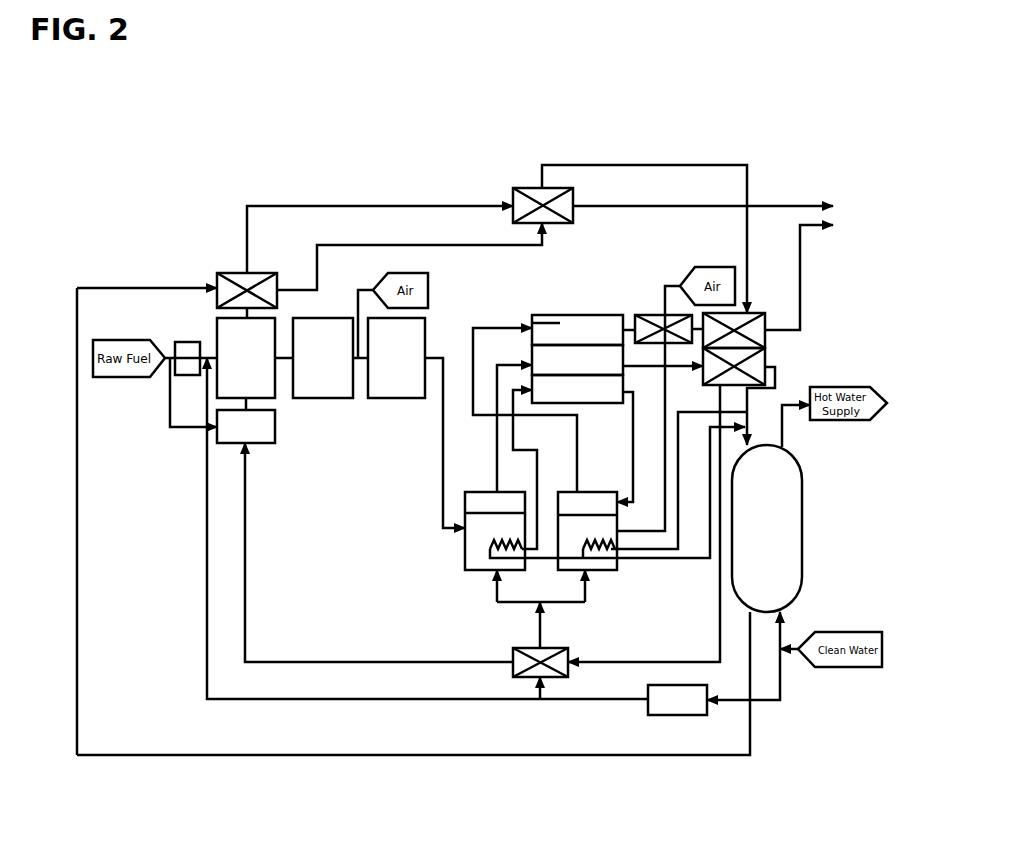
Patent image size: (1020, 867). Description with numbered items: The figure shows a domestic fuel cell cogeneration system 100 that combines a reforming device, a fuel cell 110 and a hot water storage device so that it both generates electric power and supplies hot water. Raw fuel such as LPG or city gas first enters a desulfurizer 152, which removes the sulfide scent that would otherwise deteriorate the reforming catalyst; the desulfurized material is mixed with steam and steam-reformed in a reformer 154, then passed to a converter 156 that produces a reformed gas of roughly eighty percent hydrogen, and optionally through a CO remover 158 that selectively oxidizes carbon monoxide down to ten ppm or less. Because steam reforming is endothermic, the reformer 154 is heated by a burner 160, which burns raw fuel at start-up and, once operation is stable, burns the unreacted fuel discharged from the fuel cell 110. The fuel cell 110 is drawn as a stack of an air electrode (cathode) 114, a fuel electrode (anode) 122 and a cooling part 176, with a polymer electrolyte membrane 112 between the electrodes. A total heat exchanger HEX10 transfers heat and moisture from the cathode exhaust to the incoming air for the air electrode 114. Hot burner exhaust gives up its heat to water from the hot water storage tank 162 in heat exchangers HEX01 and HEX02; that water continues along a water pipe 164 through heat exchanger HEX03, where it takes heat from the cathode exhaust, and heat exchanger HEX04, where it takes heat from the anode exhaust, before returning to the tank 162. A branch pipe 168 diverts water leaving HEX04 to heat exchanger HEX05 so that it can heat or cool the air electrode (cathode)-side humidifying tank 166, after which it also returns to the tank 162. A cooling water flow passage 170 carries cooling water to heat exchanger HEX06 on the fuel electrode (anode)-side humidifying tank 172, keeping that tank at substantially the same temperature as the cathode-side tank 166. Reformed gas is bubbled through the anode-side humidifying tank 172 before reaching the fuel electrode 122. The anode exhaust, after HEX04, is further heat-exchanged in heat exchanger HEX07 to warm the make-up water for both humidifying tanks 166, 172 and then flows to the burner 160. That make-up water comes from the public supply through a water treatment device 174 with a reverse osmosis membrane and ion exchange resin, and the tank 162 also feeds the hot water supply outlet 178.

The domestic fuel cell cogeneration system 100 is at (124, 178).
The fuel cell 110 is at (585, 315).
The polymer electrolyte membrane 112 is at (553, 340).
The air electrode (cathode) 114 is at (577, 330).
The fuel electrode (anode) 122 is at (577, 360).
The cooling part 176 is at (577, 389).
The desulfurizer 152 is at (188, 350).
The reformer 154 is at (246, 358).
The converter 156 is at (323, 358).
The CO remover 158 is at (396, 358).
The burner 160 is at (246, 426).
The hot water storage tank 162 is at (767, 528).
The water pipe 164 is at (80, 688).
The air electrode (cathode)-side humidifying tank 166 is at (608, 565).
The branch pipe 168 is at (705, 562).
The cooling water flow passage 170 is at (537, 472).
The fuel electrode (anode)-side humidifying tank 172 is at (473, 570).
The water treatment device 174 is at (677, 700).
The hot water supply line 178 is at (782, 440).
The heat exchanger HEX01 is at (225, 288).
The heat exchanger HEX02 is at (522, 205).
The heat exchanger HEX03 is at (757, 320).
The heat exchanger HEX04 is at (760, 355).
The heat exchanger HEX05 is at (600, 572).
The heat exchanger HEX06 is at (497, 546).
The heat exchanger HEX07 is at (520, 660).
The total heat exchanger HEX10 is at (655, 325).